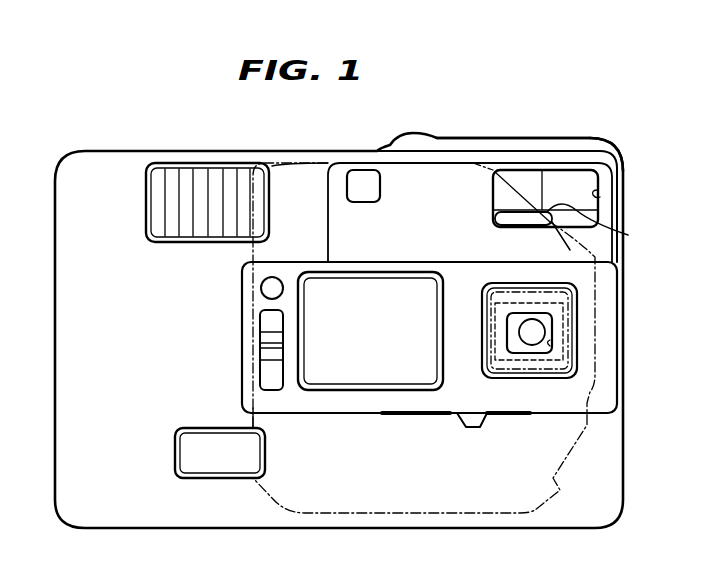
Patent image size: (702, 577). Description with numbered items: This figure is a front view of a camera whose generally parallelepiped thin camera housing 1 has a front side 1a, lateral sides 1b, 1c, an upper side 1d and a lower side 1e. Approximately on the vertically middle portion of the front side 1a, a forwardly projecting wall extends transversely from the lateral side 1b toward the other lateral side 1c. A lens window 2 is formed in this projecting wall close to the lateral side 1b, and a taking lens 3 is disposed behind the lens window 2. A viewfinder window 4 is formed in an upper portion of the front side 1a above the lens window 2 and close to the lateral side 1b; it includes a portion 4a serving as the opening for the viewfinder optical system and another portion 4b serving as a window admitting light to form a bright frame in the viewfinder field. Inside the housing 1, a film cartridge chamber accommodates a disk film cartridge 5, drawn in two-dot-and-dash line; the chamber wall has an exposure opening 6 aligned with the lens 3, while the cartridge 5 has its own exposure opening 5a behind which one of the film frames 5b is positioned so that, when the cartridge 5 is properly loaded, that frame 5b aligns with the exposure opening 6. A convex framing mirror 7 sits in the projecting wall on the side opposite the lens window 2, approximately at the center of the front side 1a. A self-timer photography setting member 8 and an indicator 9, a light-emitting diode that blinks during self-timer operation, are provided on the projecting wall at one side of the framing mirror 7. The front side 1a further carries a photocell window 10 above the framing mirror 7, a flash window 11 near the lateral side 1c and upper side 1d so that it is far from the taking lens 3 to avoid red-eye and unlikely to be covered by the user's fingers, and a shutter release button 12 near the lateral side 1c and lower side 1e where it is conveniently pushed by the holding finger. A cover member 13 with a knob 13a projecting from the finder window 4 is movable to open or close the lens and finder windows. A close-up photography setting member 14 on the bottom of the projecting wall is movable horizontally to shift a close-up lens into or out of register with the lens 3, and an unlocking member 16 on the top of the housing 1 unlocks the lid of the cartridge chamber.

The camera housing 1 is at (249, 146).
The front side 1a is at (429, 357).
The lateral side 1b is at (624, 438).
The lateral side 1c is at (56, 438).
The upper side 1d is at (377, 150).
The lower side 1e is at (178, 529).
The lens window 2 is at (550, 348).
The taking lens 3 is at (537, 332).
The viewfinder window 4 is at (600, 194).
The viewfinder opening portion 4a is at (600, 175).
The bright frame light window portion 4b is at (528, 195).
The disk film cartridge 5 is at (395, 514).
The exposure opening 5a is at (562, 372).
The film frame 5b is at (562, 362).
The exposure opening 6 is at (557, 304).
The convex framing mirror 7 is at (370, 331).
The self-timer photography setting member 8 is at (273, 358).
The indicator 9 is at (275, 278).
The photocell window 10 is at (358, 170).
The flash window 11 is at (170, 170).
The shutter release button 12 is at (228, 470).
The cover member 13 is at (578, 220).
The knob 13a is at (584, 228).
The close-up photography setting member 14 is at (437, 415).
The unlocking member 16 is at (563, 138).